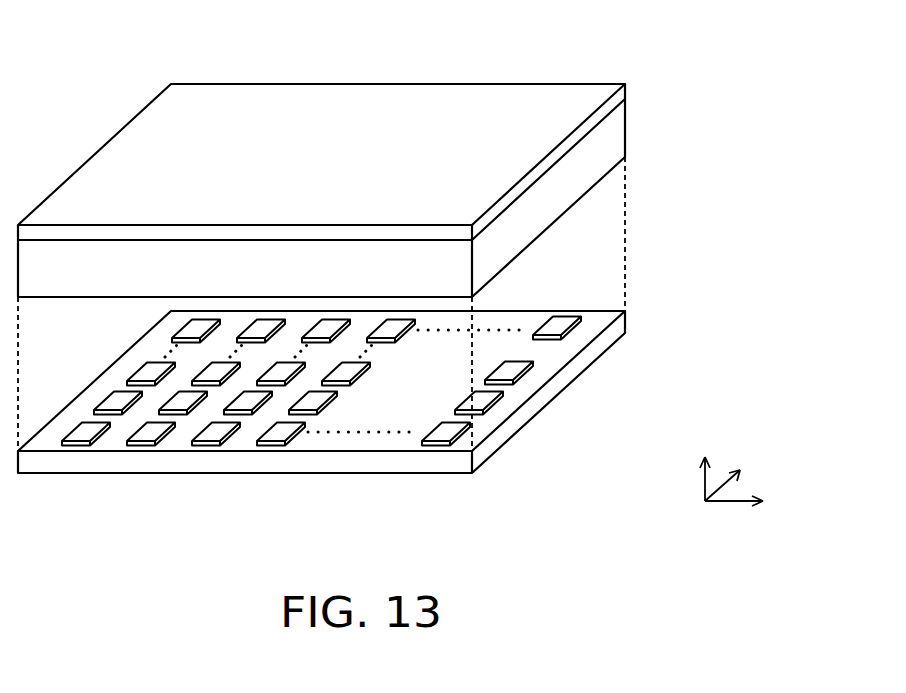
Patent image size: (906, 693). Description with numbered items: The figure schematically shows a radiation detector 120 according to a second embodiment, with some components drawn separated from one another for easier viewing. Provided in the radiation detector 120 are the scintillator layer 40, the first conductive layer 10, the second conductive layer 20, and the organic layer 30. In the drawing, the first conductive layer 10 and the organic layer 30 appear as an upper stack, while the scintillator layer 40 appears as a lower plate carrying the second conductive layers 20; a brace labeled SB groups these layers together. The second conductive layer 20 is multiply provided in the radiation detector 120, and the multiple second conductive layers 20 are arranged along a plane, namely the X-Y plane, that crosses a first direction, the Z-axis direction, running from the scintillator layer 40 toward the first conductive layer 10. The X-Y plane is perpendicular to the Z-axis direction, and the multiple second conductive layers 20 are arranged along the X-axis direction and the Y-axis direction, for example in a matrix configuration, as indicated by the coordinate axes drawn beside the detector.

The radiation detector 120 is at (713, 55).
The substrate stack SB is at (698, 78).
The first conductive layer 10 is at (616, 101).
The organic layer 30 is at (620, 145).
The second conductive layer 20 is at (82, 433).
The scintillator layer 40 is at (615, 327).